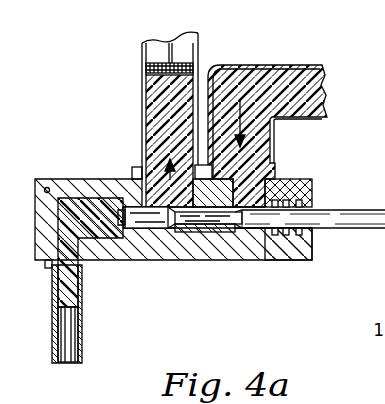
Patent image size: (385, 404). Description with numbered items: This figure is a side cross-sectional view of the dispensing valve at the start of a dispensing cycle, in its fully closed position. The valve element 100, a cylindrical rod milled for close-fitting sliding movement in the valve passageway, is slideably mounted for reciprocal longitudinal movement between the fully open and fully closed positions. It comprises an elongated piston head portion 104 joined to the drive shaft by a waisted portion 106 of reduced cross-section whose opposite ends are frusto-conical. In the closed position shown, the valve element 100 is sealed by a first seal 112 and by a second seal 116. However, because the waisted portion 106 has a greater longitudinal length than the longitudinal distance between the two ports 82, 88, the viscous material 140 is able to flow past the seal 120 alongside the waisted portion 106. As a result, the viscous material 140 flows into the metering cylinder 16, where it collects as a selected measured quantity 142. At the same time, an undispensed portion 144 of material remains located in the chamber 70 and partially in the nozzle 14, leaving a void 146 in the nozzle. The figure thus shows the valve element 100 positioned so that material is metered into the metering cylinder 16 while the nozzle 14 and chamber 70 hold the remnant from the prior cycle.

The nozzle 14 is at (82, 352).
The metering cylinder 16 is at (146, 72).
The chamber 70 is at (80, 240).
The port 82 is at (240, 67).
The port 88 is at (145, 165).
The valve element 100 is at (325, 221).
The piston head portion 104 is at (148, 228).
The waisted portion 106 is at (200, 232).
The first seal 112 is at (130, 228).
The second seal 116 is at (290, 195).
The seal 120 is at (233, 262).
The viscous material 140 is at (258, 80).
The selected measured quantity 142 is at (153, 108).
The undispensed portion 144 is at (80, 198).
The void 146 is at (67, 344).